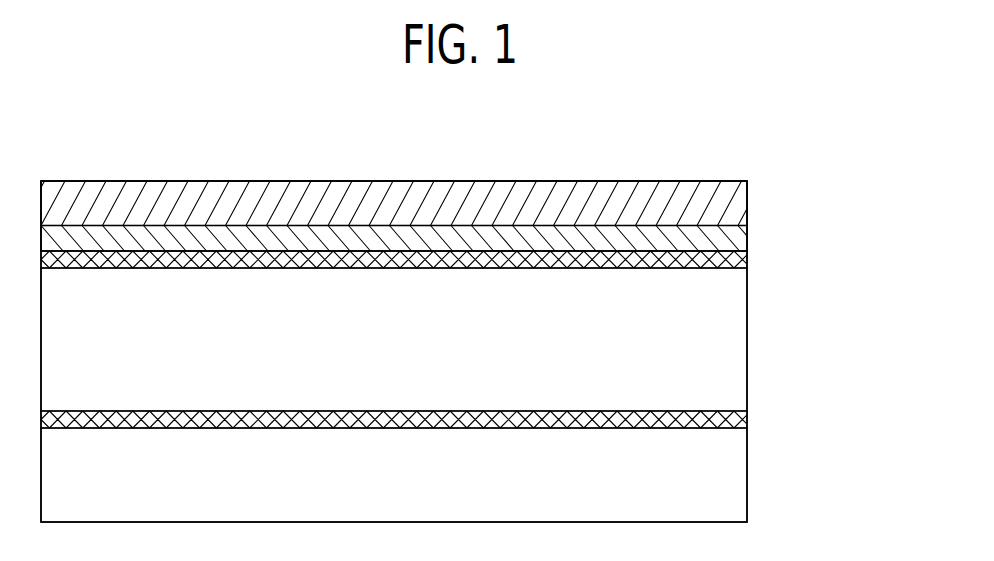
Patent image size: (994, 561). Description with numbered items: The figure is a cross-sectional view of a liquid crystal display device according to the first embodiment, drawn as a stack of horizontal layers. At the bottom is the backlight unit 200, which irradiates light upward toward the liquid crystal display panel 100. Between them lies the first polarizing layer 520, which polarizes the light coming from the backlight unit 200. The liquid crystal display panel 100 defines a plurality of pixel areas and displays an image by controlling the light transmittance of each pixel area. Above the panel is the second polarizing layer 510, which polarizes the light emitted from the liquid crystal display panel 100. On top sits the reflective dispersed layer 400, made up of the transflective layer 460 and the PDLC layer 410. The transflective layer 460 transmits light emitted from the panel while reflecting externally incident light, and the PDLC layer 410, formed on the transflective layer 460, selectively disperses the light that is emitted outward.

The reflective dispersed layer 400 is at (850, 187).
The PDLC layer 410 is at (737, 198).
The transflective layer 460 is at (737, 234).
The second polarizing layer 510 is at (737, 257).
The liquid crystal display panel 100 is at (737, 335).
The first polarizing layer 520 is at (743, 417).
The backlight unit 200 is at (737, 477).